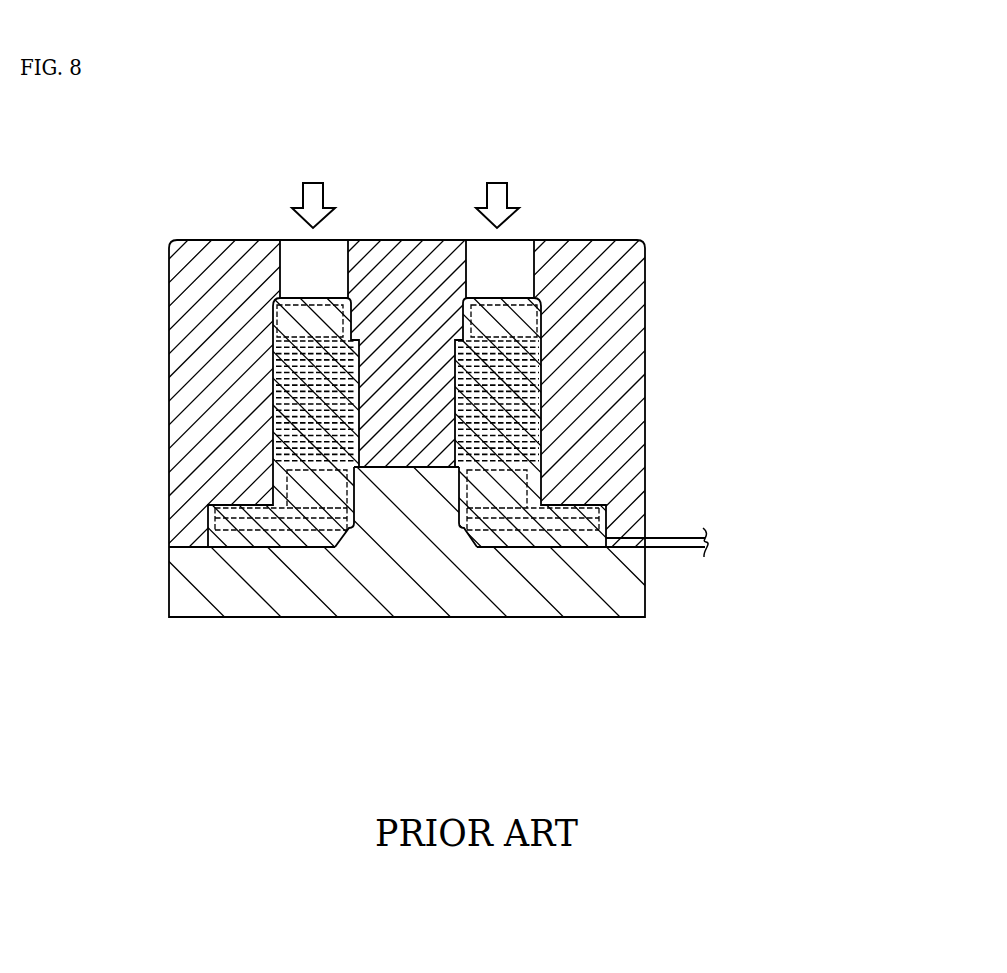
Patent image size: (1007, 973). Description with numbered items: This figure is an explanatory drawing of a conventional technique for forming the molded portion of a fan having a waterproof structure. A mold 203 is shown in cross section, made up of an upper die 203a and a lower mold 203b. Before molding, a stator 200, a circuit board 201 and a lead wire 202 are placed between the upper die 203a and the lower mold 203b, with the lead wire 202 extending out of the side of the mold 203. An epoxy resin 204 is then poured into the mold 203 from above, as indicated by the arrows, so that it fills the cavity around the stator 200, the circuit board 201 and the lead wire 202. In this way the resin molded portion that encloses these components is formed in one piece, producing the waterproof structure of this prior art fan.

The stator 200 is at (549, 375).
The circuit board 201 is at (583, 502).
The lead wire 202 is at (660, 538).
The mold 203 is at (614, 235).
The upper die 203a is at (635, 293).
The lower mold 203b is at (517, 603).
The epoxy resin 204 is at (320, 197).